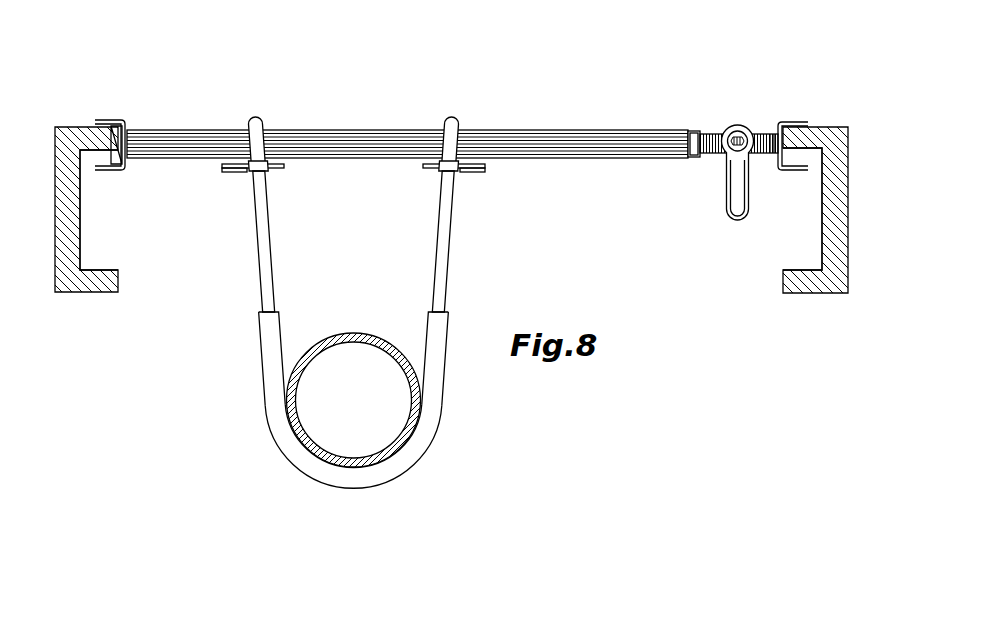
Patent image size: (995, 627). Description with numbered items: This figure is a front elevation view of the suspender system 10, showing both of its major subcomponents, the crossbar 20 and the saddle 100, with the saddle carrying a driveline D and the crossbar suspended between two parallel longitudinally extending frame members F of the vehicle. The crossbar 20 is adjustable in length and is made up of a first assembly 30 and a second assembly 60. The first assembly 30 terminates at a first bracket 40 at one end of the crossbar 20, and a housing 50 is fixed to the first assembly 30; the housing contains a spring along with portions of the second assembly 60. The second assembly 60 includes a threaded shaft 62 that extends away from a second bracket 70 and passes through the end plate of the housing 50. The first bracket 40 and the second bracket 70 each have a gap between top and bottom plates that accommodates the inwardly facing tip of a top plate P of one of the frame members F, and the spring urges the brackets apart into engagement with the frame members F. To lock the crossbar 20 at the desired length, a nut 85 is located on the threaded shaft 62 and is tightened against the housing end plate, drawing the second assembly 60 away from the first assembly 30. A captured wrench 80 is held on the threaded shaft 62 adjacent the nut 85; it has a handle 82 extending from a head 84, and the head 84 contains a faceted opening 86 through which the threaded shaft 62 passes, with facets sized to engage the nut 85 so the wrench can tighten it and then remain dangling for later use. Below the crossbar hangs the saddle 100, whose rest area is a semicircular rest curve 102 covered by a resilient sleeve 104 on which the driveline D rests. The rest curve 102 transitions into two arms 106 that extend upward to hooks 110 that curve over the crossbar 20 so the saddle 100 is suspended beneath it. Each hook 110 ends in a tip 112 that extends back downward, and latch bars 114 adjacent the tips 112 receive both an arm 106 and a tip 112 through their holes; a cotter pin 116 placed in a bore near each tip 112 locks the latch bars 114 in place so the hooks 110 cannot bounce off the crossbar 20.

The suspender system 10 is at (545, 58).
The crossbar 20 is at (606, 105).
The first assembly 30 is at (128, 130).
The first bracket 40 is at (102, 105).
The housing 50 is at (369, 130).
The second assembly 60 is at (776, 136).
The threaded shaft 62 is at (712, 136).
The second bracket 70 is at (810, 105).
The captured wrench 80 is at (731, 234).
The handle 82 is at (731, 212).
The head 84 is at (745, 158).
The nut 85 is at (694, 158).
The faceted opening 86 is at (731, 130).
The saddle 100 is at (496, 387).
The rest curve 102 is at (402, 472).
The resilient sleeve 104 is at (270, 408).
The arms 106 is at (262, 277).
The hooks 110 is at (244, 105).
The tips 112 is at (266, 176).
The latch bars 114 is at (222, 166).
The cotter pin 116 is at (240, 172).
The top plate P is at (74, 127).
The frame members F is at (81, 225).
The driveline D is at (353, 333).